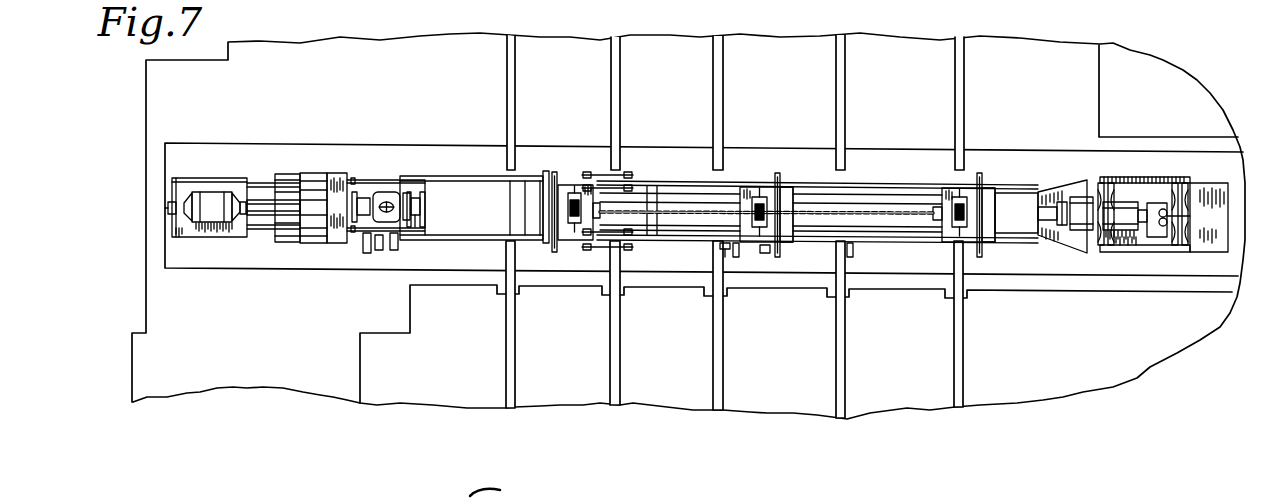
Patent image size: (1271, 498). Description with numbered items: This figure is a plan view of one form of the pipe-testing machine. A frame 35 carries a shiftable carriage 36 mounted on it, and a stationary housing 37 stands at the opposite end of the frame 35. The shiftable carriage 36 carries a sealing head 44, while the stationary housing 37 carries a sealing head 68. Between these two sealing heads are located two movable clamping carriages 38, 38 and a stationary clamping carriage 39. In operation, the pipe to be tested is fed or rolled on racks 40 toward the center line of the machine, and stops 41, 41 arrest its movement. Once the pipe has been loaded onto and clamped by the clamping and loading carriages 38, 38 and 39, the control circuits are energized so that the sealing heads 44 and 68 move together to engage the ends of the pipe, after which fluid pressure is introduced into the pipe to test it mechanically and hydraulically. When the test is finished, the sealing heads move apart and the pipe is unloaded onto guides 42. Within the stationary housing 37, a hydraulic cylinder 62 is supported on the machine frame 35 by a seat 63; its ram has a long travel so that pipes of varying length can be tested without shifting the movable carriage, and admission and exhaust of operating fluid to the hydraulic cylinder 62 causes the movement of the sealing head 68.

The frame 35 is at (653, 244).
The shiftable carriage 36 is at (1122, 264).
The stationary housing 37 is at (322, 253).
The movable clamping carriage 38 is at (780, 169).
The stationary clamping carriage 39 is at (545, 168).
The rack 40 is at (516, 350).
The stop 41 is at (726, 252).
The guide 42 is at (516, 95).
The sealing head 44 is at (1052, 245).
The hydraulic cylinder 62 is at (268, 210).
The seat 63 is at (338, 181).
The sealing head 68 is at (428, 205).